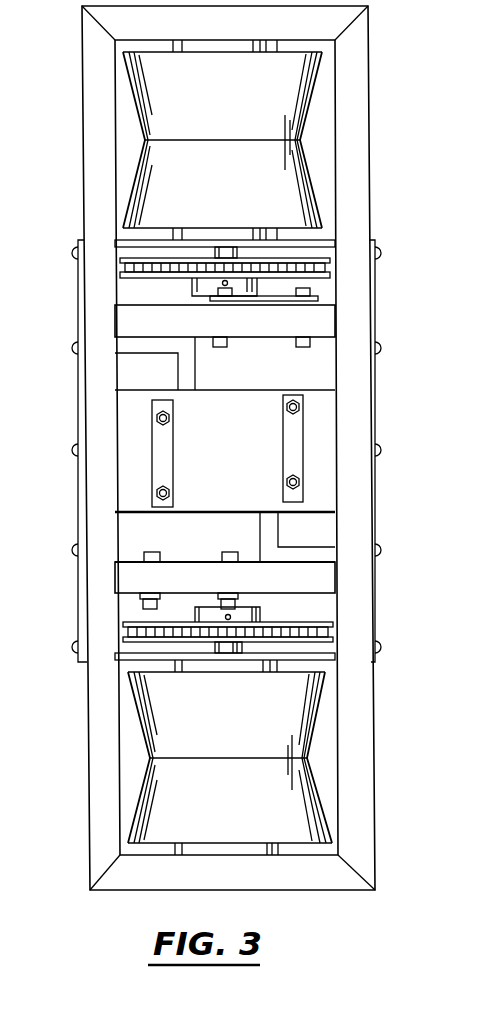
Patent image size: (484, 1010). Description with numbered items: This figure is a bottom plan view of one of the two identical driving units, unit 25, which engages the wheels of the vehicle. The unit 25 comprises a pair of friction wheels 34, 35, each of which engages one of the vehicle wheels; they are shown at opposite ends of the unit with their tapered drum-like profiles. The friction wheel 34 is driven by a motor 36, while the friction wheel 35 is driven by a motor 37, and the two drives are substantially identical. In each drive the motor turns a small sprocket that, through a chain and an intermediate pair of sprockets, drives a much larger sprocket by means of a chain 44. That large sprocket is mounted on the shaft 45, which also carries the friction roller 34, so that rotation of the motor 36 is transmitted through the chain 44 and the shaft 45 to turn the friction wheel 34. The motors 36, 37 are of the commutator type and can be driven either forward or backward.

The driving unit 25 is at (374, 156).
The friction wheel 34 is at (137, 815).
The friction wheel 35 is at (315, 93).
The motor 36 is at (127, 532).
The motor 37 is at (333, 372).
The chain 44 is at (333, 632).
The shaft 45 is at (247, 645).